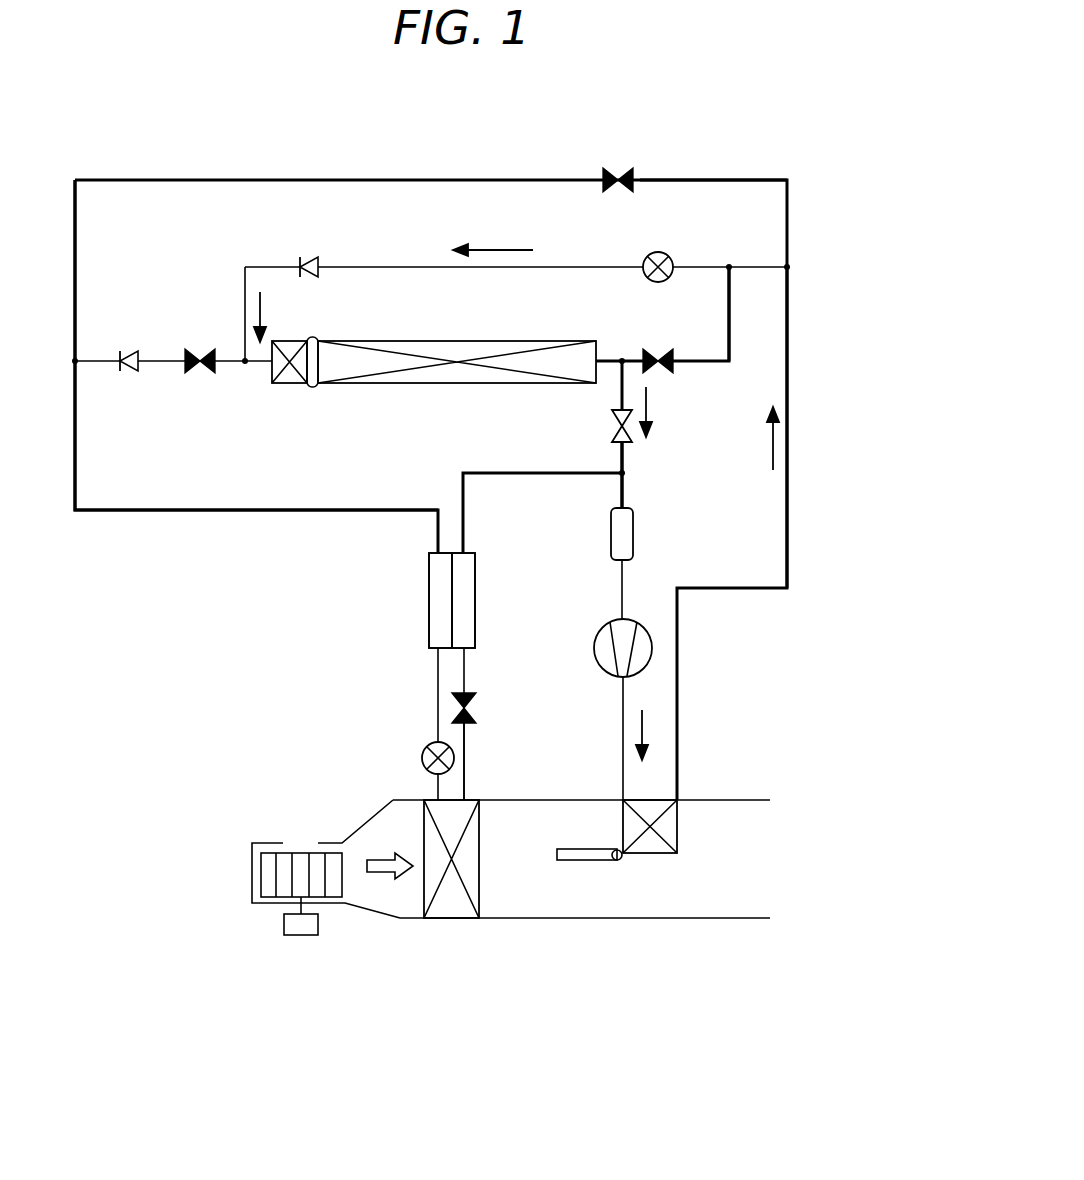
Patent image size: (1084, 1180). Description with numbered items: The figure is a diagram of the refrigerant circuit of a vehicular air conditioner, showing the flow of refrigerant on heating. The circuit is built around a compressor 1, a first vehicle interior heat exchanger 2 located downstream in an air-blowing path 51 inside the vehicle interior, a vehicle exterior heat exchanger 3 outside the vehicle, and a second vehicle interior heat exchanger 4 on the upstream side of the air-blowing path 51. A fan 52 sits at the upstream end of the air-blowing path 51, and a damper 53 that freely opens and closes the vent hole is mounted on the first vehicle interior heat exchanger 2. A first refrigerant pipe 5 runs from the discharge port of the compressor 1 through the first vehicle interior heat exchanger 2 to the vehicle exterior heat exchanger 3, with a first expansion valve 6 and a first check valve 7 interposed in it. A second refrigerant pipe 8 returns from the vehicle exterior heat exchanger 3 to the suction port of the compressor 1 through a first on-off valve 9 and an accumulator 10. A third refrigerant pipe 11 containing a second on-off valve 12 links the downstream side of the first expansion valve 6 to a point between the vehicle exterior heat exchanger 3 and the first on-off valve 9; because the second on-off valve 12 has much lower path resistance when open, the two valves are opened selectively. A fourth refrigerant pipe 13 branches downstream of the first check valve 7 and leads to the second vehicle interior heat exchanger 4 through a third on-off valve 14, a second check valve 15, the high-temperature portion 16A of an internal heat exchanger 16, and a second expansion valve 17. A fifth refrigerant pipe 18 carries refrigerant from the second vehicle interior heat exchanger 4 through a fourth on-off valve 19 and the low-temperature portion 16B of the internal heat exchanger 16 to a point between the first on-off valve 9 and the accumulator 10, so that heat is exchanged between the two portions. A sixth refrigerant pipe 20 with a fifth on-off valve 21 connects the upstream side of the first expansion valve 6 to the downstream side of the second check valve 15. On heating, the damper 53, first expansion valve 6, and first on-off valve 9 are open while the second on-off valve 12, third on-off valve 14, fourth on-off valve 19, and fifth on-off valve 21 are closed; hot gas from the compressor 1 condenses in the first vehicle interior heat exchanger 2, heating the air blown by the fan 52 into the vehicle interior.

The compressor 1 is at (597, 636).
The first vehicle interior heat exchanger 2 is at (680, 830).
The vehicle exterior heat exchanger 3 is at (418, 340).
The second vehicle interior heat exchanger 4 is at (480, 838).
The first refrigerant pipe 5 is at (788, 506).
The first expansion valve 6 is at (672, 263).
The first check valve 7 is at (318, 266).
The second refrigerant pipe 8 is at (622, 457).
The first on-off valve 9 is at (612, 432).
The accumulator 10 is at (611, 551).
The third refrigerant pipe 11 is at (729, 330).
The second on-off valve 12 is at (648, 355).
The fourth refrigerant pipe 13 is at (147, 510).
The third on-off valve 14 is at (205, 368).
The second check valve 15 is at (128, 368).
The internal heat exchanger 16 is at (330, 545).
The high-temperature portion 16A is at (429, 588).
The low-temperature portion 16B is at (452, 634).
The second expansion valve 17 is at (422, 758).
The fifth refrigerant pipe 18 is at (464, 772).
The fourth on-off valve 19 is at (475, 705).
The sixth refrigerant pipe 20 is at (668, 180).
The fifth on-off valve 21 is at (628, 170).
The air-blowing path 51 is at (556, 918).
The fan 52 is at (267, 897).
The damper 53 is at (592, 850).